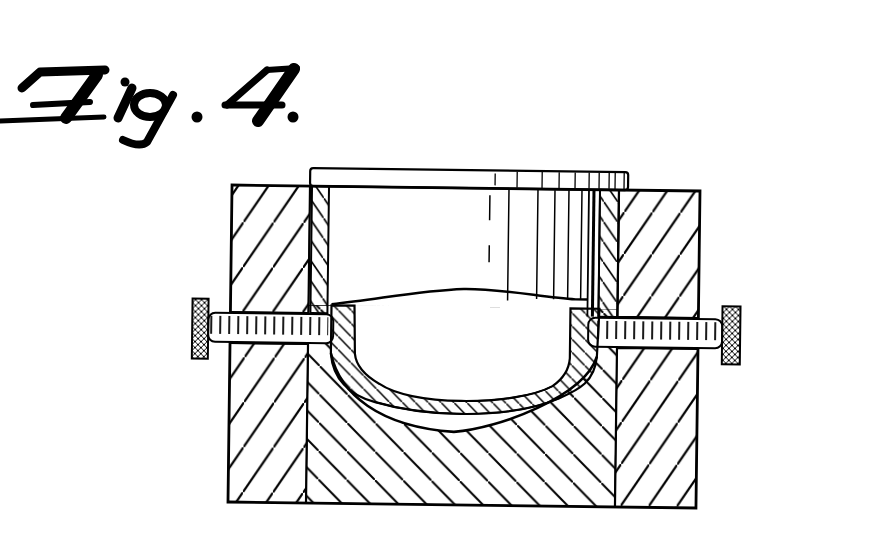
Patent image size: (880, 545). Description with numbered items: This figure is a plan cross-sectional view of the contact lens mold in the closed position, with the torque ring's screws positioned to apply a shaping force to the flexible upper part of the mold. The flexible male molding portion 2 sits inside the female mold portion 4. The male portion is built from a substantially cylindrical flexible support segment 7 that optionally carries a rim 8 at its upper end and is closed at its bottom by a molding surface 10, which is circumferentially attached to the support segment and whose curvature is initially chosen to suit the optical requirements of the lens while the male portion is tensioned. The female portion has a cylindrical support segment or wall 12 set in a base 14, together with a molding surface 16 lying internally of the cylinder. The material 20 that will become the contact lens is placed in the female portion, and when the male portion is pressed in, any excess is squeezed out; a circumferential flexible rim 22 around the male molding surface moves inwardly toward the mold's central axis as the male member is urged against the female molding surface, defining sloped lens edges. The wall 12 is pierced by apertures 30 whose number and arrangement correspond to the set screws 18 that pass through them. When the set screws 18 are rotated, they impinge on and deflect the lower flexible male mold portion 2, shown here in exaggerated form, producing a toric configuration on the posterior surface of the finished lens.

The flexible male molding portion 2 is at (565, 208).
The female mold portion 4 is at (345, 455).
The cylindrical flexible support segment 7 is at (310, 250).
The rim 8 is at (448, 183).
The molding surface 10 is at (530, 405).
The cylindrical support segment or wall 12 is at (328, 200).
The base 14 is at (593, 510).
The molding surface 16 is at (480, 412).
The set screws 18 is at (192, 325).
The material 20 is at (420, 422).
The circumferential flexible rim 22 is at (364, 385).
The apertures 30 is at (594, 352).